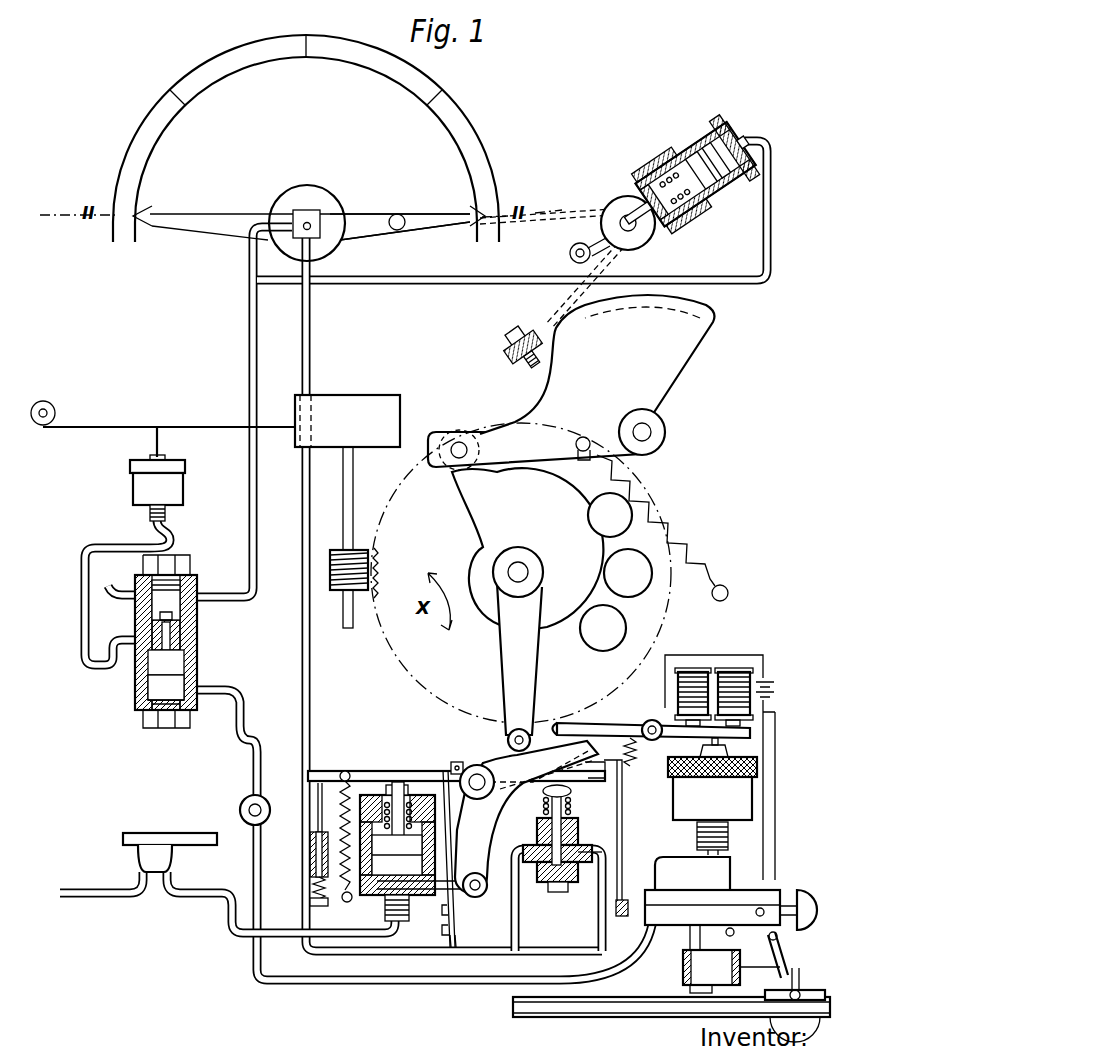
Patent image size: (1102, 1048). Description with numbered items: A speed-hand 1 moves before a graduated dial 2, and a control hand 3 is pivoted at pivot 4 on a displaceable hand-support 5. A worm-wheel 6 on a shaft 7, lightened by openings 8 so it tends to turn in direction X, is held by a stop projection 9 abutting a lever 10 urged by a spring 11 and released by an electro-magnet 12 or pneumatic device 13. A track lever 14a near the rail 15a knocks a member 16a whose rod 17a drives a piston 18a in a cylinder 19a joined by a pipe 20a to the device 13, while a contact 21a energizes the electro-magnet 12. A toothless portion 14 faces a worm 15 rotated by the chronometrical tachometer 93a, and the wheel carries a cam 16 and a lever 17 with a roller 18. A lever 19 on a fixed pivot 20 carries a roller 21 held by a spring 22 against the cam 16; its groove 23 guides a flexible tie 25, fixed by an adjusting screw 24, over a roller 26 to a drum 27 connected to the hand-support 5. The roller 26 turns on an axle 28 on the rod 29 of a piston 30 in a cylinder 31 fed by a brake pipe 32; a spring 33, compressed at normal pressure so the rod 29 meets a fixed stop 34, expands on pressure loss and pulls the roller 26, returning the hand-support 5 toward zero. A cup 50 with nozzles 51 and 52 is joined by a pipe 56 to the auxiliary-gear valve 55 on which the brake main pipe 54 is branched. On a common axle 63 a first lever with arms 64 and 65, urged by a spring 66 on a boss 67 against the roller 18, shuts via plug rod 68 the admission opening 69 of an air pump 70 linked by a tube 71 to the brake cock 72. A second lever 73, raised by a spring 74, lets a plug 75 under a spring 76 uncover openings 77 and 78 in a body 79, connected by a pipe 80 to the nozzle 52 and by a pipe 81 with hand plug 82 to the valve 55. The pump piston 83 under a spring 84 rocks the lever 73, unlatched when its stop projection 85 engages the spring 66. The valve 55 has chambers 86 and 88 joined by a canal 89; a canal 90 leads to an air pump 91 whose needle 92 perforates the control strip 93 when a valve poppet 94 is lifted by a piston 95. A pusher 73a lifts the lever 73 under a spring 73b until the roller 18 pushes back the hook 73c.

The speed-hand 1 is at (309, 200).
The dial 2 is at (306, 131).
The control hand 3 is at (405, 200).
The pivot 4 is at (396, 197).
The hand-support 5 is at (400, 187).
The worm-wheel 6 is at (504, 573).
The shaft 7 is at (495, 567).
The openings 8 is at (638, 572).
The stop projection 9 is at (555, 705).
The lever 10 is at (653, 701).
The spring 11 is at (650, 772).
The electro-magnet 12 is at (720, 749).
The pneumatic device 13 is at (739, 814).
The toothless portion of periphery 14 is at (391, 537).
The worm 15 is at (319, 570).
The cam 16 is at (510, 548).
The lever 17 is at (499, 659).
The roller 18 is at (495, 737).
The lever 19 is at (534, 422).
The fixed pivot 20 is at (673, 434).
The roller 21 is at (441, 430).
The spring 22 is at (662, 519).
The groove 23 is at (628, 365).
The adjusting screw 24 is at (508, 347).
The flexible tie 25 is at (552, 238).
The roller 26 is at (638, 179).
The drum 27 is at (307, 202).
The axle 28 is at (627, 199).
The rod 29 is at (591, 202).
The piston 30 is at (692, 189).
The cylinder 31 is at (674, 166).
The pipe 32 is at (542, 235).
The spring 33 is at (714, 207).
The fixed stop 34 is at (557, 252).
The cup 50 is at (324, 190).
The nozzle 51 is at (284, 186).
The nozzle 52 is at (400, 594).
The main pipe of the brakes 54 is at (92, 602).
The auxiliary-gear valve 55 is at (113, 611).
The pipe 56 is at (244, 412).
The common axle 63 is at (465, 758).
The arm 64 is at (604, 830).
The arm 65 is at (526, 817).
The spring 66 is at (419, 836).
The boss 67 is at (503, 842).
The plug rod 68 is at (431, 927).
The admission opening 69 is at (371, 908).
The air pump 70 is at (366, 838).
The tube 71 is at (227, 939).
The brake cock 72 is at (141, 857).
The second lever 73 is at (456, 750).
The manually operated pusher 73a is at (338, 947).
The spring 73b is at (649, 858).
The hook 73c is at (629, 722).
The spring 74 is at (310, 841).
The plug 75 is at (621, 852).
The spring 76 is at (581, 825).
The opening 77 is at (558, 906).
The opening 78 is at (569, 867).
The body 79 is at (573, 906).
The pipe 80 is at (470, 979).
The pipe 81 is at (424, 868).
The plug 82 is at (236, 810).
The piston 83 is at (298, 851).
The spring 84 is at (295, 801).
The stop projection 85 is at (436, 748).
The chamber 86 is at (149, 641).
The chamber 88 is at (115, 693).
The canal 89 is at (207, 642).
The canal 90 is at (108, 598).
The air pump 91 is at (127, 488).
The needle 92 is at (113, 442).
The control strip 93 is at (163, 397).
The chronometrical tachometer 93a is at (347, 404).
The valve poppet 94 is at (198, 641).
The piston 95 is at (200, 675).
The lever 14a is at (806, 996).
The rail 15a is at (671, 1022).
The member 16a is at (793, 945).
The rod 17a is at (767, 963).
The piston 18a is at (689, 1016).
The cylinder 19a is at (706, 952).
The pipe 20a is at (693, 960).
The electrical contact 21a is at (812, 899).